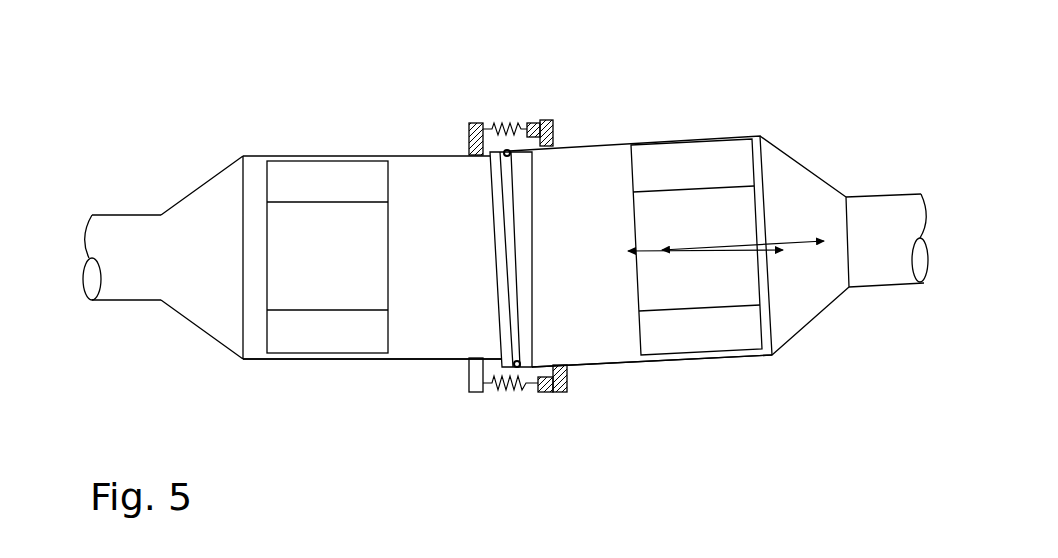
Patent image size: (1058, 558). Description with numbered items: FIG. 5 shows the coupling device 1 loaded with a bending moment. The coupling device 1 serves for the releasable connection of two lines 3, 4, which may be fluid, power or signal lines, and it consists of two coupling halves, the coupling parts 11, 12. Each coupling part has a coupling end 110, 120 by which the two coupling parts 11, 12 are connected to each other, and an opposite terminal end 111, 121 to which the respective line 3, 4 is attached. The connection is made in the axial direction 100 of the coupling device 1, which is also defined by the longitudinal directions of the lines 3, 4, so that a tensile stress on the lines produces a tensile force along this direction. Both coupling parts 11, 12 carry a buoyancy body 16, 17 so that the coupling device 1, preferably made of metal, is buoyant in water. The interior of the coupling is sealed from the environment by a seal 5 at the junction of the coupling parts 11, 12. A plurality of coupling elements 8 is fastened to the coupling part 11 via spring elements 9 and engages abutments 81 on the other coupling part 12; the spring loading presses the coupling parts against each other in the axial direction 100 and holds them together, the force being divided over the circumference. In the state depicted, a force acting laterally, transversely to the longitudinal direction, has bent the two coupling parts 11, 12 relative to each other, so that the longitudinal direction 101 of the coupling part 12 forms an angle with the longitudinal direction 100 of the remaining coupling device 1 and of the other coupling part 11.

The coupling device 1 is at (185, 80).
The line 3 is at (113, 215).
The line 4 is at (880, 195).
The seal 5 is at (540, 152).
The coupling element 8 is at (533, 122).
The spring element 9 is at (500, 122).
The coupling part 11 is at (400, 155).
The coupling part 12 is at (652, 142).
The buoyancy body 16 is at (388, 183).
The buoyancy body 17 is at (632, 172).
The abutment 81 is at (568, 393).
The axial direction 100 is at (720, 250).
The longitudinal direction of the coupling part 101 is at (798, 244).
The coupling end 110 is at (473, 350).
The terminal end 111 is at (170, 320).
The coupling end 120 is at (567, 347).
The terminal end 121 is at (832, 163).